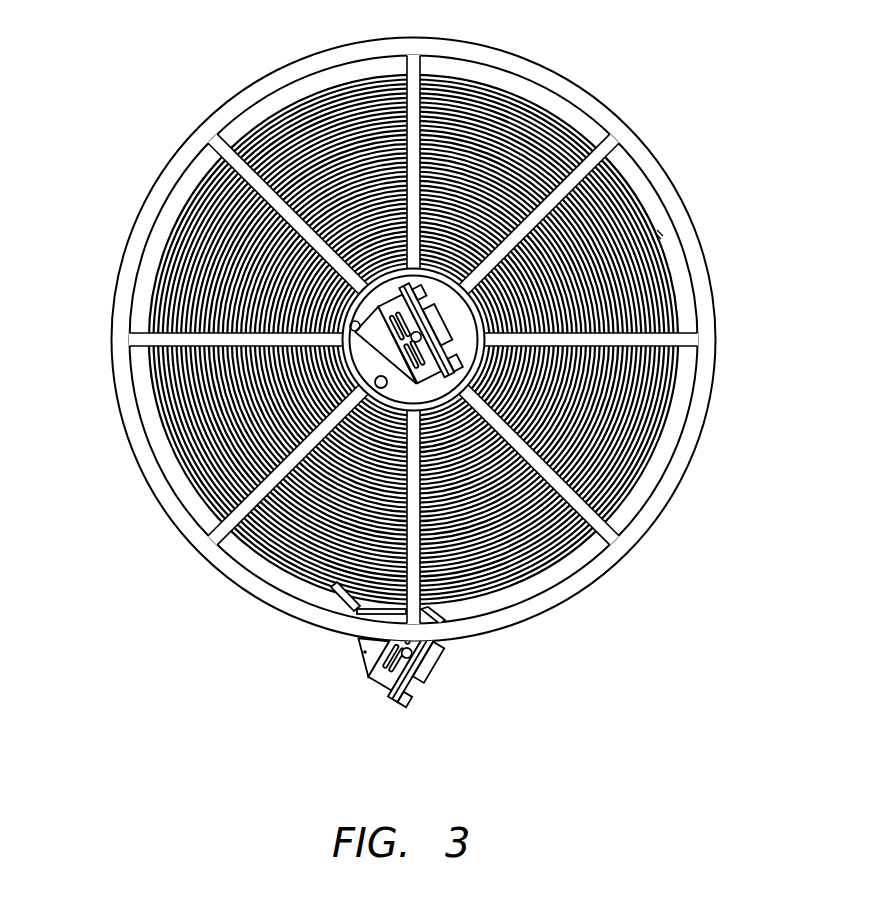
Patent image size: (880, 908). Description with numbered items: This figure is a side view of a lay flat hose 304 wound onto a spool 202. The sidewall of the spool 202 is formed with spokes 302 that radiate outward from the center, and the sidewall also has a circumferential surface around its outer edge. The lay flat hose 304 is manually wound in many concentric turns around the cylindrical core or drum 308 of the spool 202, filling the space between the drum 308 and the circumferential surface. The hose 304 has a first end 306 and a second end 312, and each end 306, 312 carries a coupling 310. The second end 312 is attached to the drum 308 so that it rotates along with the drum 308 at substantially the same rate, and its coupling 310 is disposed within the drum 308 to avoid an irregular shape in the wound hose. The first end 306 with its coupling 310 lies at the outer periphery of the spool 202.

The spool 202 is at (712, 93).
The spokes 302 is at (415, 61).
The lay flat hose 304 is at (523, 90).
The first end 306 is at (357, 641).
The drum 308 is at (348, 353).
The coupling 310 is at (362, 332).
The second end 312 is at (385, 320).